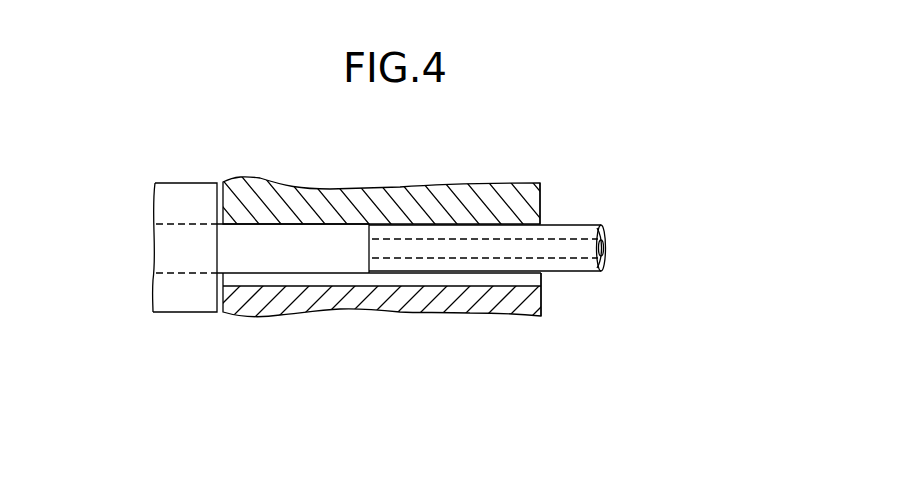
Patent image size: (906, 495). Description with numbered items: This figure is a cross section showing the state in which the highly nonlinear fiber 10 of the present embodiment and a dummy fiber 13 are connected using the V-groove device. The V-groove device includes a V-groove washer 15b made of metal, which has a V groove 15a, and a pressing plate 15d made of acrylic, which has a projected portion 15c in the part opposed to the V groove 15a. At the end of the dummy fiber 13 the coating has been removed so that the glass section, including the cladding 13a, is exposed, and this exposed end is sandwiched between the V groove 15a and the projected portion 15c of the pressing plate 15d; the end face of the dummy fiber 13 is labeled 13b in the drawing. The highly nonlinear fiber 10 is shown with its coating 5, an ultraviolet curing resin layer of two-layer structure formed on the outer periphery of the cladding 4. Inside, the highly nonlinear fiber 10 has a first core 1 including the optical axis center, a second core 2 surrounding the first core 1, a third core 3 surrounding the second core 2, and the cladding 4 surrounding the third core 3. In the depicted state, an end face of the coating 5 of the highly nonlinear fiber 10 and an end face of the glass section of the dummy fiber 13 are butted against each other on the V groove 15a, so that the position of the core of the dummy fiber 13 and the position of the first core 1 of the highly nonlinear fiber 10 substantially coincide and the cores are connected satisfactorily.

The dummy fiber 13 is at (150, 214).
The cladding 13a is at (260, 233).
The end face of holding member 13b is at (160, 208).
The V groove 15a is at (423, 309).
The V-groove washer 15b is at (544, 303).
The projected portion 15c is at (387, 173).
The pressing plate 15d is at (544, 202).
The highly nonlinear fiber 10 is at (532, 215).
The coating 5 is at (606, 252).
The first core 1 is at (646, 244).
The second core 2 is at (646, 244).
The third core 3 is at (646, 244).
The cladding 4 is at (606, 243).